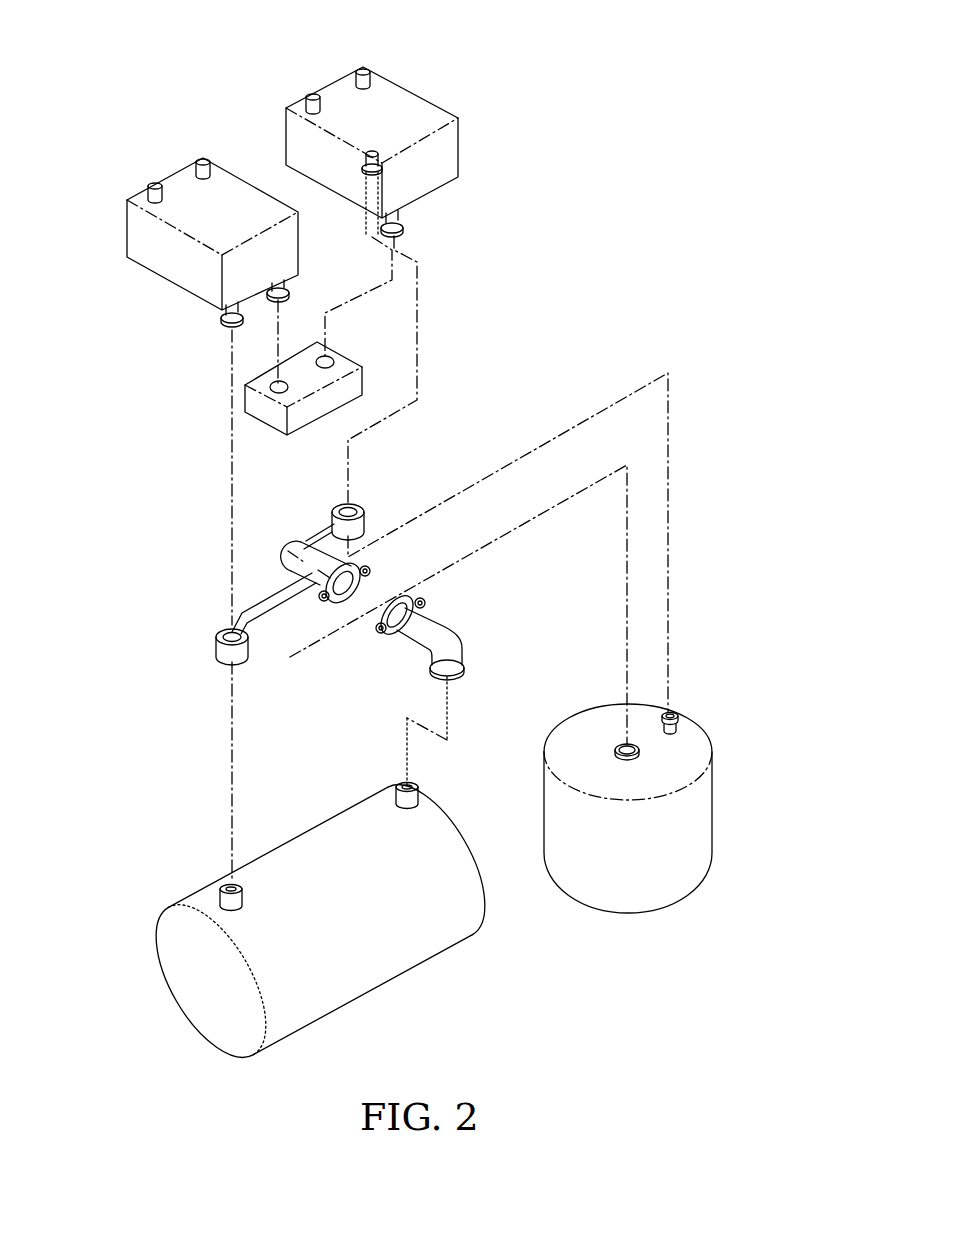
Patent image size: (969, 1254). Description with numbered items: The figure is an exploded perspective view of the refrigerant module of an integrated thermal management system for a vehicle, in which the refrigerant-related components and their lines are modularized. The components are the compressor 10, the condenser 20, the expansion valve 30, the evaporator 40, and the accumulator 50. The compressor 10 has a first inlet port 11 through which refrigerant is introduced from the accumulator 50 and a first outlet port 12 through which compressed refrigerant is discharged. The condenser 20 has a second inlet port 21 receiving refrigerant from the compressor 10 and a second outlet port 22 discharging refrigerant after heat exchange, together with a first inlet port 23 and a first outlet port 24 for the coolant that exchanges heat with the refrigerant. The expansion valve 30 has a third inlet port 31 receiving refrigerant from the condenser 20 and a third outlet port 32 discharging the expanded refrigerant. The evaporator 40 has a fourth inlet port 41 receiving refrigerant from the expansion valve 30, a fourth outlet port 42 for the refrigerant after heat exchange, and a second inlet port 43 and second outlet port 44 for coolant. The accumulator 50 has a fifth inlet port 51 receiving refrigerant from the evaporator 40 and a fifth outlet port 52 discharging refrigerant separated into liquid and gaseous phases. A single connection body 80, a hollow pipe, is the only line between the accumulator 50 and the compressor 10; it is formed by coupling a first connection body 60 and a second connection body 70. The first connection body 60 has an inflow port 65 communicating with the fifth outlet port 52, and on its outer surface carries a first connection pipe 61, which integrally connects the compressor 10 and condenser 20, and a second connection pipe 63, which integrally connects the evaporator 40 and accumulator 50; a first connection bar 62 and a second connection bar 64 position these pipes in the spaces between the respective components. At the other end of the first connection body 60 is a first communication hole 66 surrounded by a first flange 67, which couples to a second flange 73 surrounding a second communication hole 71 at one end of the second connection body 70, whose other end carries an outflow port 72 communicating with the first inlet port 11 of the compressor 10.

The compressor 10 is at (365, 980).
The first inlet port 11 is at (420, 790).
The first outlet port 12 is at (226, 886).
The condenser 20 is at (135, 228).
The second inlet port 21 is at (225, 325).
The second outlet port 22 is at (290, 292).
The first inlet port 23 is at (155, 188).
The first outlet port 24 is at (200, 160).
The expansion valve 30 is at (258, 422).
The third inlet port 31 is at (271, 389).
The third outlet port 32 is at (330, 358).
The evaporator 40 is at (398, 88).
The fourth inlet port 41 is at (402, 226).
The fourth outlet port 42 is at (378, 156).
The second inlet port 43 is at (313, 96).
The second outlet port 44 is at (360, 68).
The accumulator 50 is at (575, 890).
The fifth inlet port 51 is at (678, 714).
The fifth outlet port 52 is at (640, 750).
The first connection body 60 is at (284, 570).
The first connection pipe 61 is at (216, 648).
The first connection bar 62 is at (255, 605).
The second connection pipe 63 is at (362, 510).
The second connection bar 64 is at (320, 535).
The inflow port 65 is at (292, 548).
The first communication hole 66 is at (364, 578).
The first flange 67 is at (325, 602).
The second connection body 70 is at (456, 635).
The second communication hole 71 is at (417, 607).
The outflow port 72 is at (465, 668).
The second flange 73 is at (382, 634).
The connection body 80 is at (401, 738).